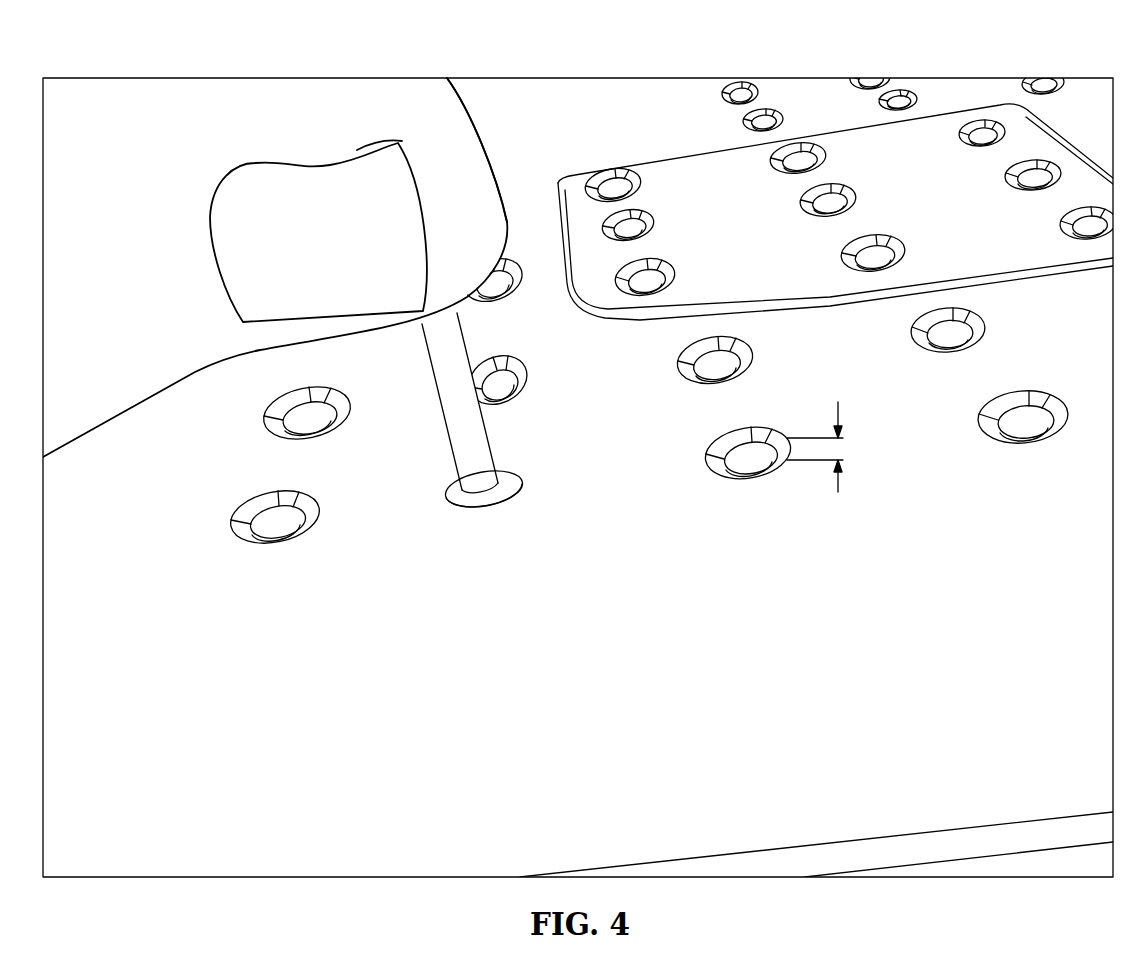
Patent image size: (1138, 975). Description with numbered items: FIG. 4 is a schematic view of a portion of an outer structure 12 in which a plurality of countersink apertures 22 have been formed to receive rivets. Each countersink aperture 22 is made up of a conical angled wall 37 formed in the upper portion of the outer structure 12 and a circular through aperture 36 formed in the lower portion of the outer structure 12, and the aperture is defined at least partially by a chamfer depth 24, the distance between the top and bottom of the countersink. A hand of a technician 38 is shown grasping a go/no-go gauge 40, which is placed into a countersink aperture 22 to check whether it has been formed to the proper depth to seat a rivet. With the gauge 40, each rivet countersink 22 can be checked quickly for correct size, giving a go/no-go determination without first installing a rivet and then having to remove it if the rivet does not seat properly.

The outer structure 12 is at (464, 648).
The countersink aperture 22 is at (721, 464).
The chamfer depth 24 is at (840, 412).
The circular through aperture 36 is at (757, 465).
The conical angled wall 37 is at (728, 445).
The hand of a technician 38 is at (367, 120).
The go/no-go gauge 40 is at (453, 388).